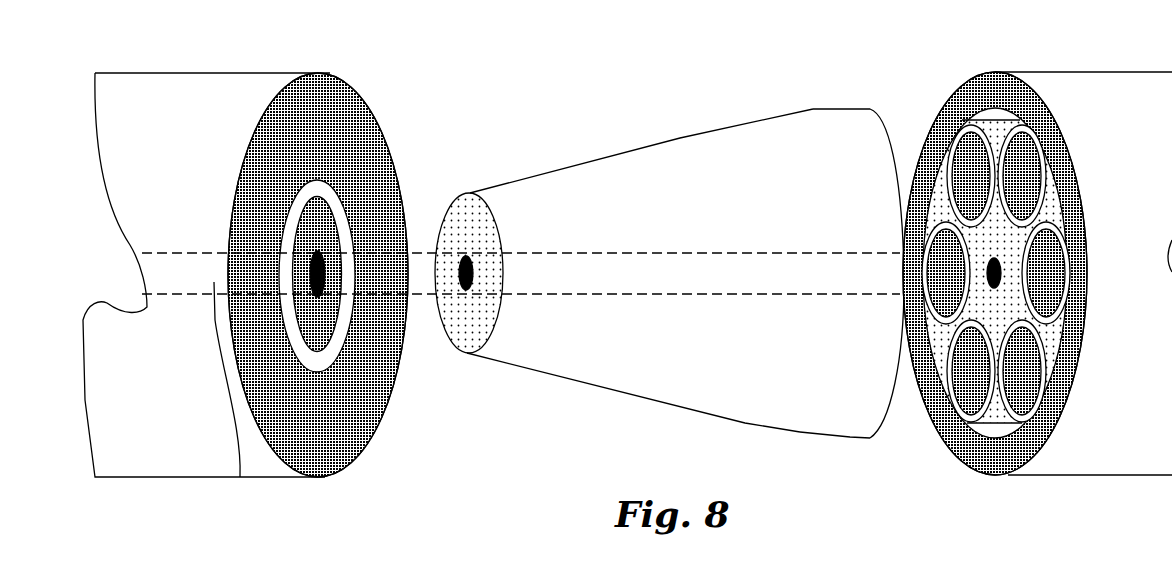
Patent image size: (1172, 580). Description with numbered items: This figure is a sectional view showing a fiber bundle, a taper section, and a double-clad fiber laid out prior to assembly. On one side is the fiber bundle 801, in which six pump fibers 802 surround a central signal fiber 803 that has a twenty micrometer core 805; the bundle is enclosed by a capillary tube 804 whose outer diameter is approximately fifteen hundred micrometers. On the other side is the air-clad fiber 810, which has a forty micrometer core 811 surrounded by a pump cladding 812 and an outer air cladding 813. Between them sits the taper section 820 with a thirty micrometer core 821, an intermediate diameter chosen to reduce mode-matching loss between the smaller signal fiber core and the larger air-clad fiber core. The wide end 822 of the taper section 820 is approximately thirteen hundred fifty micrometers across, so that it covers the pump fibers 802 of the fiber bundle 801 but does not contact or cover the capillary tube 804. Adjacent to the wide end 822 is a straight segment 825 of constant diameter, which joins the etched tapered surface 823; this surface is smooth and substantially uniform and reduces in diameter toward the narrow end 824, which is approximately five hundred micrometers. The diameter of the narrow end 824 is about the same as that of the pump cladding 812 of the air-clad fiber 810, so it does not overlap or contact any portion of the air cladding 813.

The fiber bundle 801 is at (1147, 100).
The pump fibers 802 is at (1020, 178).
The signal fiber 803 is at (1020, 273).
The capillary tube 804 is at (1010, 450).
The core 805 is at (995, 287).
The air-clad fiber 810 is at (243, 73).
The core 811 is at (240, 477).
The pump cladding 812 is at (323, 335).
The air cladding 813 is at (340, 190).
The taper section 820 is at (653, 195).
The core 821 is at (547, 282).
The wide end 822 is at (790, 142).
The tapered surface 823 is at (607, 390).
The narrow end 824 is at (498, 202).
The straight segment 825 is at (845, 438).